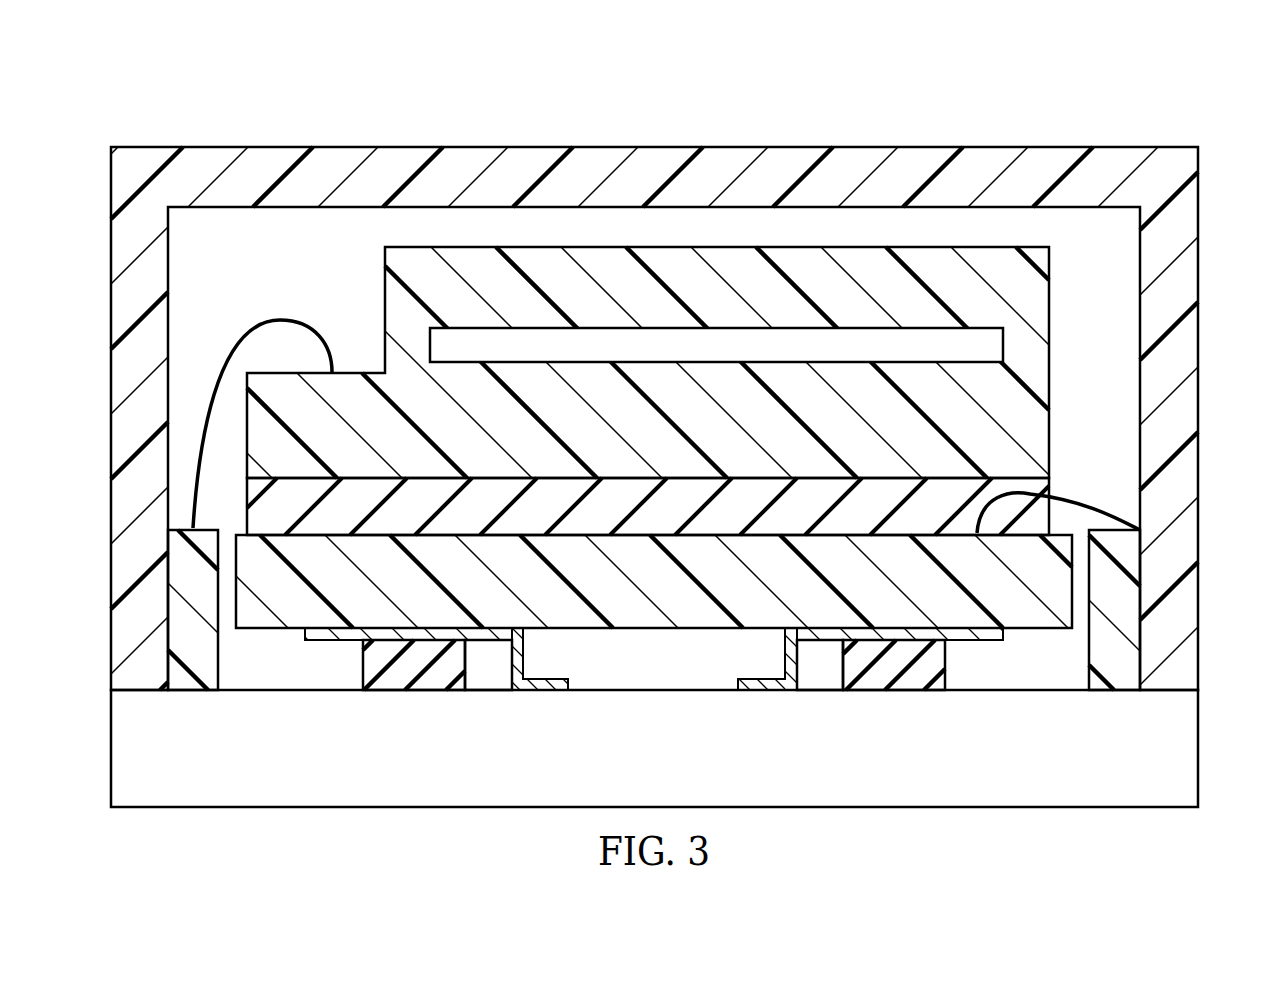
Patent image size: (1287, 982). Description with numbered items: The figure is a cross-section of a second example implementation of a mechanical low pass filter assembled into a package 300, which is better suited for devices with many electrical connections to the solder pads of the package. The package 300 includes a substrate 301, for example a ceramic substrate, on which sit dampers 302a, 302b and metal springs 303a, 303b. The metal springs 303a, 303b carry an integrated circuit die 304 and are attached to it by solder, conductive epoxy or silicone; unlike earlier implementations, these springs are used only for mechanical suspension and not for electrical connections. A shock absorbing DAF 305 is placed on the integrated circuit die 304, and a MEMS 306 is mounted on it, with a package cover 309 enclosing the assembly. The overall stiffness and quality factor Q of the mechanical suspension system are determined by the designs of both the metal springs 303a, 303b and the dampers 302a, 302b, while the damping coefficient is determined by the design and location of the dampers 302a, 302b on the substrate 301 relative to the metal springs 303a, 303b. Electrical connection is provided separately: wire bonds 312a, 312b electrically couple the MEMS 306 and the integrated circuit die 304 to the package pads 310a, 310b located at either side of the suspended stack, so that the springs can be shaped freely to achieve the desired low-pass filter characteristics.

The package 300 is at (884, 98).
The substrate 301 is at (298, 798).
The damper 302a is at (370, 662).
The damper 302b is at (937, 658).
The metal spring 303a is at (583, 660).
The metal spring 303b is at (768, 676).
The integrated circuit die 304 is at (641, 618).
The shock absorbing DAF 305 is at (365, 488).
The MEMS 306 is at (385, 298).
The package cover 309 is at (212, 157).
The package pad 310a is at (177, 608).
The package pad 310b is at (1130, 607).
The wire bond 312a is at (265, 316).
The wire bond 312b is at (1081, 505).